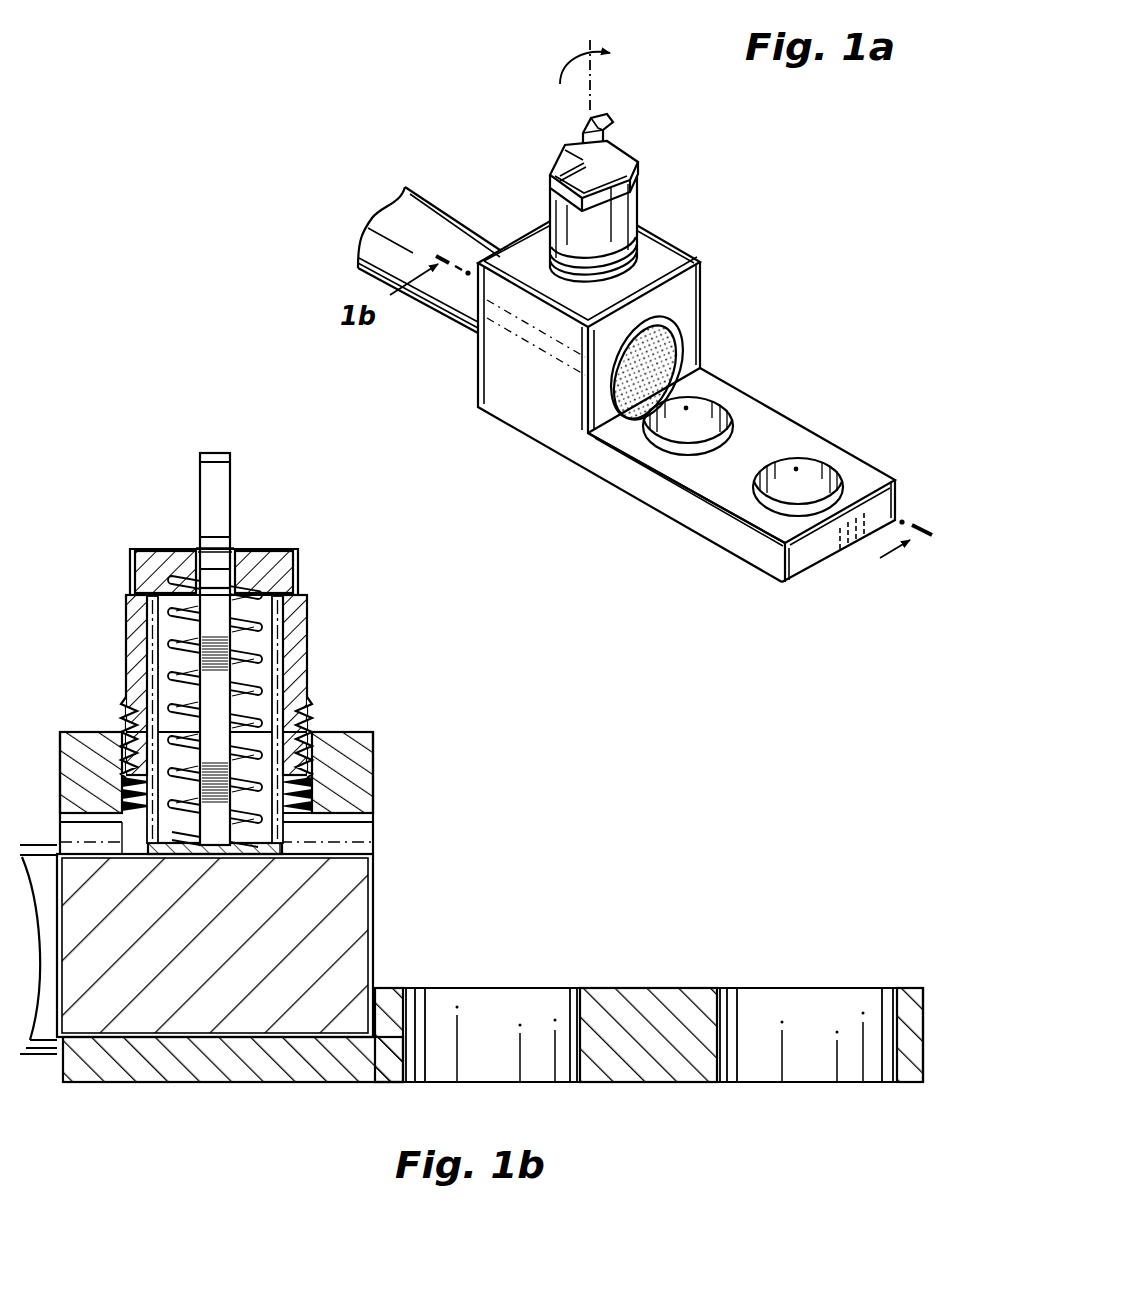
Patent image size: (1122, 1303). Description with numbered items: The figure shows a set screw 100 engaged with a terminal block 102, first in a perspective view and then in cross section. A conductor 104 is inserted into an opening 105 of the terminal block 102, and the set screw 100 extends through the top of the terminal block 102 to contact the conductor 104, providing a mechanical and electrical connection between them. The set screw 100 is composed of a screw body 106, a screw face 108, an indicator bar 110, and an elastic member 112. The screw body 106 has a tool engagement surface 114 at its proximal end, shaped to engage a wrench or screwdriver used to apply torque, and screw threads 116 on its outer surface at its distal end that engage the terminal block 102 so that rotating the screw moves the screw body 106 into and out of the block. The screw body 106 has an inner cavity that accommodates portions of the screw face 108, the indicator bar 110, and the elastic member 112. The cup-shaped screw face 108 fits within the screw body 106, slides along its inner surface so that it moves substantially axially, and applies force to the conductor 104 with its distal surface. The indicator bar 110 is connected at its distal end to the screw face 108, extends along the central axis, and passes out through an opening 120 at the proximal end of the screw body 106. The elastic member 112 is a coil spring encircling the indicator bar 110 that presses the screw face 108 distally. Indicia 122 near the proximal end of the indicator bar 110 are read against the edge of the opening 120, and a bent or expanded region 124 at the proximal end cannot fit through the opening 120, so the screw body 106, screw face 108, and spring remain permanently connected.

In FIG. 1A, the set screw 100 is at (540, 181).
In FIG. 1B, the set screw 100 is at (220, 631).
In FIG. 1A, the terminal block 102 is at (827, 432).
In FIG. 1B, the terminal block 102 is at (633, 941).
In FIG. 1A, the conductor 104 is at (683, 342).
In FIG. 1B, the conductor 104 is at (357, 960).
In FIG. 1A, the opening 105 is at (667, 366).
In FIG. 1B, the screw body 106 is at (307, 638).
In FIG. 1B, the screw face 108 is at (273, 838).
In FIG. 1B, the indicator bar 110 is at (220, 510).
In FIG. 1B, the elastic member 112 is at (168, 675).
In FIG. 1B, the tool engagement surface 114 is at (298, 577).
In FIG. 1B, the screw threads 116 is at (308, 707).
In FIG. 1B, the opening (hole) 120 is at (198, 547).
In FIG. 1B, the indicia 122 is at (221, 548).
In FIG. 1B, the bent or expanded region 124 is at (229, 461).